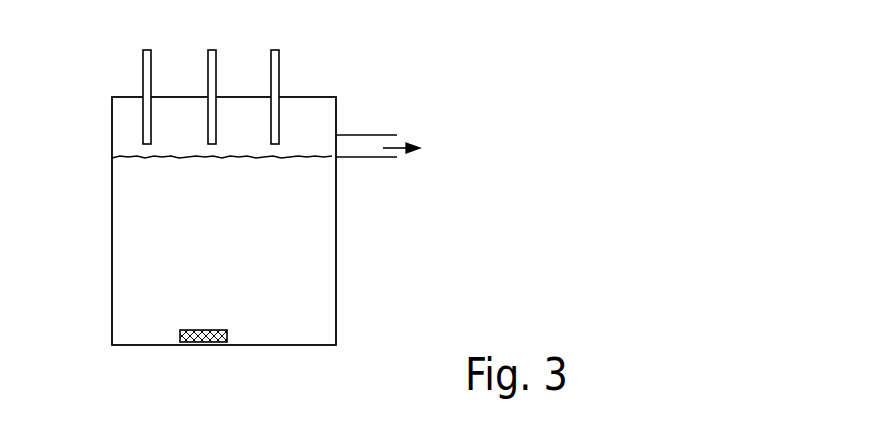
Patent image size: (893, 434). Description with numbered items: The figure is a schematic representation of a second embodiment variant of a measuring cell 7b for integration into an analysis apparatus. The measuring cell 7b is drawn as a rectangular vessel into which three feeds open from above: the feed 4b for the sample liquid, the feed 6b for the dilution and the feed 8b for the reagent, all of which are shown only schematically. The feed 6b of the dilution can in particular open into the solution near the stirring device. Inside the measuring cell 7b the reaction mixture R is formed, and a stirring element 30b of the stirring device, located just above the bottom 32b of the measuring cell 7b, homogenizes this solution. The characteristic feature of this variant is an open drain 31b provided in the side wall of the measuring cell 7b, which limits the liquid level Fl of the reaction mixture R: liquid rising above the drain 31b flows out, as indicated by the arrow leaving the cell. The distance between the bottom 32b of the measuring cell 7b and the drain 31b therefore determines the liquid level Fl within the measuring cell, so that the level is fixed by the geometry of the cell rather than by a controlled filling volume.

The feed for the sample liquid 4b is at (143, 66).
The feed of the dilution 6b is at (208, 66).
The feed for the reagent 8b is at (271, 66).
The measuring cell 7b is at (342, 108).
The open drain 31b is at (392, 155).
The stirring element 30b is at (227, 336).
The bottom 32b is at (278, 345).
The liquid level Fl is at (112, 158).
The reaction mixture R is at (138, 242).